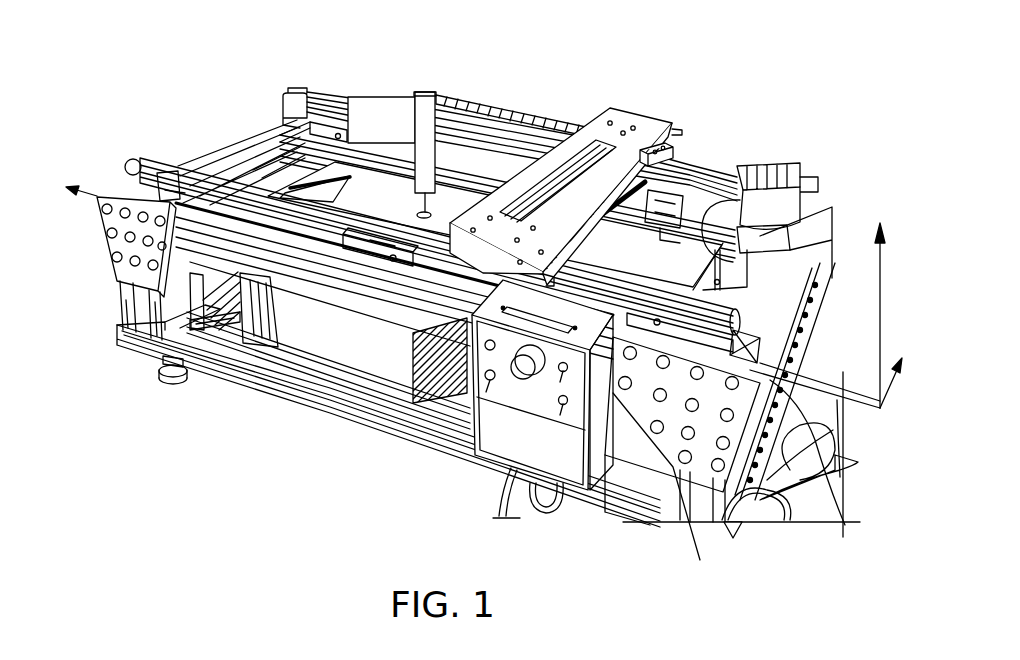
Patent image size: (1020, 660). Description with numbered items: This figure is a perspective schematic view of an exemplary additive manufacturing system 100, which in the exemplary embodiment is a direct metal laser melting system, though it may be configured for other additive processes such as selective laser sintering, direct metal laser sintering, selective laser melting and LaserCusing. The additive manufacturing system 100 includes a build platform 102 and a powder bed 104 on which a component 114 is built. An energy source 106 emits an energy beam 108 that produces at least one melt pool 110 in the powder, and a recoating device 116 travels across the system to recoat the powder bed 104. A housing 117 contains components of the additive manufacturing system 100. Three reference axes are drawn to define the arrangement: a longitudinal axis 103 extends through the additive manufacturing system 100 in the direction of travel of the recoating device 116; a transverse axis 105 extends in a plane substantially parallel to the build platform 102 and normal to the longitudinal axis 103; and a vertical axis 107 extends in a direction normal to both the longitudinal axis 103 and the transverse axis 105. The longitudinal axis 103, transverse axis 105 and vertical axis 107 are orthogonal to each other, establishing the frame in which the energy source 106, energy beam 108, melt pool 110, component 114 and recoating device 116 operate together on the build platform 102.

The additive manufacturing system 100 is at (421, 68).
The build platform 102 is at (340, 270).
The longitudinal axis 103 is at (75, 200).
The powder bed 104 is at (243, 152).
The transverse axis 105 is at (890, 395).
The energy source 106 is at (437, 95).
The vertical axis 107 is at (882, 267).
The energy beam 108 is at (420, 203).
The melt pool 110 is at (300, 283).
The component 114 is at (417, 233).
The recoating device 116 is at (675, 161).
The housing 117 is at (386, 118).